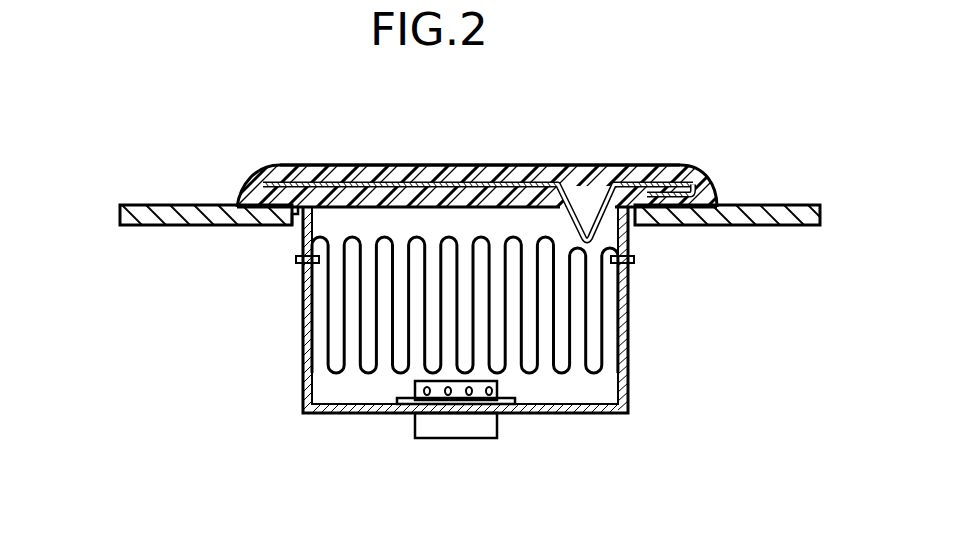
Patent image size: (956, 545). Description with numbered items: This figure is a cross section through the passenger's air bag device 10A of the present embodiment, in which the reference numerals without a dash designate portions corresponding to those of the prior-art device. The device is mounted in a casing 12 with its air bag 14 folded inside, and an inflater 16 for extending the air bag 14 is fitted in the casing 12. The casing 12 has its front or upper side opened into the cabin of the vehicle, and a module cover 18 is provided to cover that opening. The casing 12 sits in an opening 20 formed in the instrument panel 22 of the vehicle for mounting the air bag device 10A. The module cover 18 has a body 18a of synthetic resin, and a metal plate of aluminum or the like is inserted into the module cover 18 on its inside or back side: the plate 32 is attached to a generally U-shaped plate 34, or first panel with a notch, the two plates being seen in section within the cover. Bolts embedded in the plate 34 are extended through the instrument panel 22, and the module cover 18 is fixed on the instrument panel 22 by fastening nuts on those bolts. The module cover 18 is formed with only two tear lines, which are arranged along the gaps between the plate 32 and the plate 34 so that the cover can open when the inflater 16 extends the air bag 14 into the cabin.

The passenger's air bag device 10A is at (632, 144).
The casing 12 is at (627, 325).
The air bag 14 is at (600, 372).
The inflater 16 is at (497, 425).
The module cover 18 is at (535, 156).
The body 18a is at (457, 173).
The opening 20 is at (292, 214).
The instrument panel 22 is at (163, 204).
The plate 32 is at (310, 183).
The U-shaped plate 34 is at (682, 198).